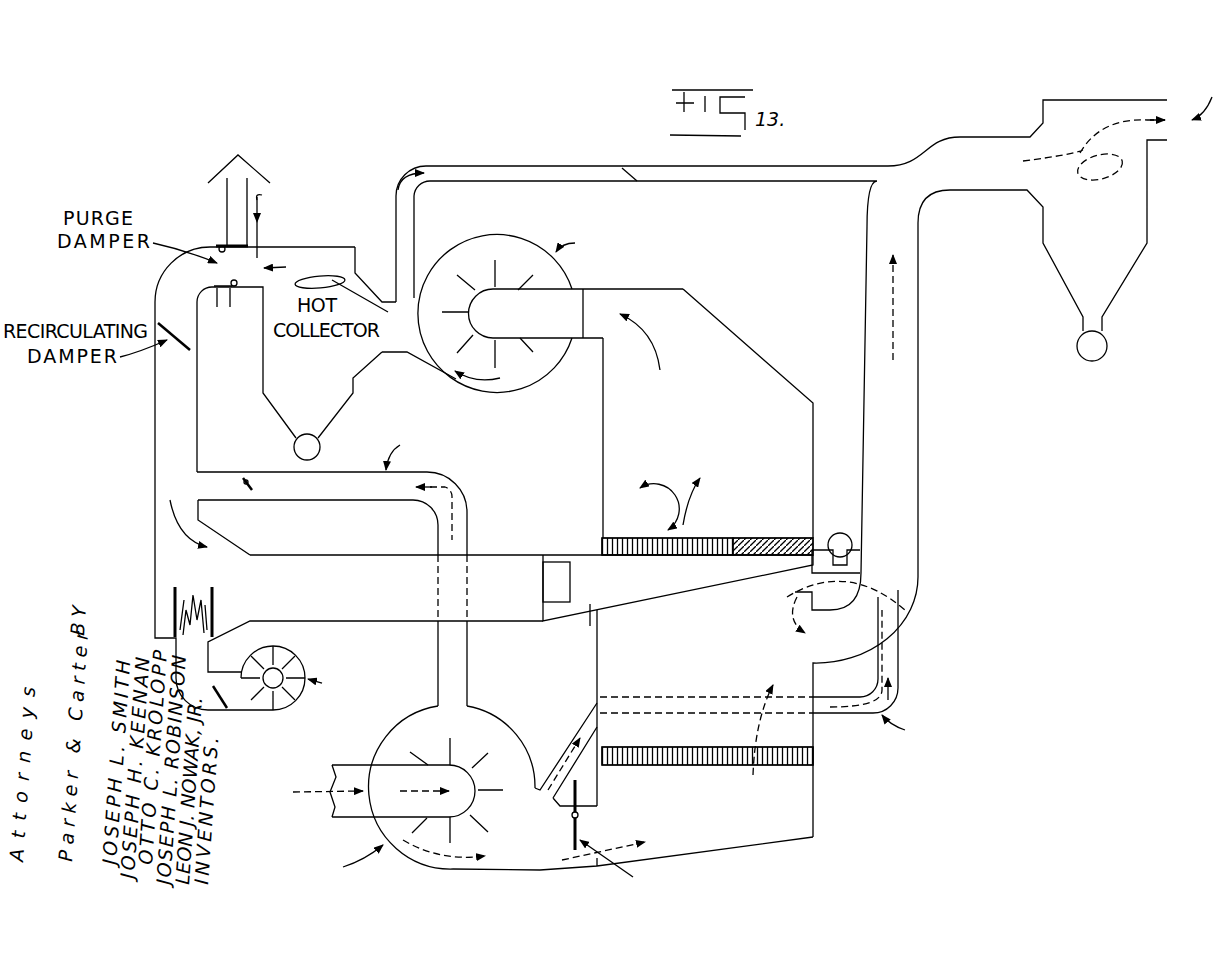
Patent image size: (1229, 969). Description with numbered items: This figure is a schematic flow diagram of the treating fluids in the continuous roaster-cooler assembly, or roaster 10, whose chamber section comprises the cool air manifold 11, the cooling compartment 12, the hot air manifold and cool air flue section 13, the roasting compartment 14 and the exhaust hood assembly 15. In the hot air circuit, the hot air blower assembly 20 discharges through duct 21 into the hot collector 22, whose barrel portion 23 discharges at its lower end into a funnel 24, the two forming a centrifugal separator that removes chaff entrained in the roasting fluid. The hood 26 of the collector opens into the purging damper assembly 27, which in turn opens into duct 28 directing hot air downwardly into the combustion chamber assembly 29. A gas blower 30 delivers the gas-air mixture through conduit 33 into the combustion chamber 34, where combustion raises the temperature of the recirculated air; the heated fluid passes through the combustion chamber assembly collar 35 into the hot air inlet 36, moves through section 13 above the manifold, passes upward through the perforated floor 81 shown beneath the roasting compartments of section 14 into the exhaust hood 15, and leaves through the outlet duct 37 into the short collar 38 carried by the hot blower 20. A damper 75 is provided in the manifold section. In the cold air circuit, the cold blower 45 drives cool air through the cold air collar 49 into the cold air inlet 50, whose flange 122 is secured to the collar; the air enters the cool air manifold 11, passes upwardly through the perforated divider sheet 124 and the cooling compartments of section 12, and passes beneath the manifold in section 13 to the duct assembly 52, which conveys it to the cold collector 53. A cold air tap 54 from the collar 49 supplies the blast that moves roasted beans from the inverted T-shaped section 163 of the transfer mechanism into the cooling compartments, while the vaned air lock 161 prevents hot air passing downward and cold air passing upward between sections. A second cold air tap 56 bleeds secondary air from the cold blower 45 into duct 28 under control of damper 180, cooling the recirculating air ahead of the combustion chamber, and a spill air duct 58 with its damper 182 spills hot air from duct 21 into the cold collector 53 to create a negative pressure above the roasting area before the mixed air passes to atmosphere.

The roaster 10 is at (760, 335).
The cool air manifold 11 is at (813, 812).
The cooling compartment 12 is at (597, 662).
The hot air manifold and cool air flue section 13 is at (590, 551).
The roasting compartment 14 is at (602, 450).
The exhaust hood assembly 15 is at (793, 375).
The hot air blower assembly 20 is at (518, 232).
The duct 21 is at (392, 352).
The hot collector 22 is at (354, 403).
The barrel portion 23 is at (263, 375).
The funnel 24 is at (287, 423).
The hood 26 is at (337, 257).
The purging damper assembly 27 is at (210, 247).
The duct 28 is at (153, 413).
The combustion chamber assembly 29 is at (148, 593).
The gas blower 30 is at (297, 656).
The conduit 33 is at (208, 660).
The combustion chamber 34 is at (172, 585).
The combustion chamber assembly collar 35 is at (366, 622).
The hot air inlet 36 is at (590, 626).
The outlet duct 37 is at (595, 315).
The short collar 38 is at (560, 296).
The cold blower 45 is at (420, 862).
The cold air collar 49 is at (535, 862).
The cold air inlet 50 is at (587, 868).
The duct assembly 52 is at (920, 400).
The cold collector 53 is at (1148, 196).
The cold air tap 54 is at (578, 733).
The second cold air tap 56 is at (468, 523).
The spill air duct 58 is at (808, 169).
The damper 75 is at (558, 598).
The roaster perforated floor 81 is at (612, 545).
The flange 122 is at (600, 868).
The divider sheet 124 is at (813, 755).
The vaned air lock 161 is at (843, 530).
The inverted T-shaped section 163 is at (875, 592).
The damper 180 is at (251, 490).
The damper 182 is at (640, 190).